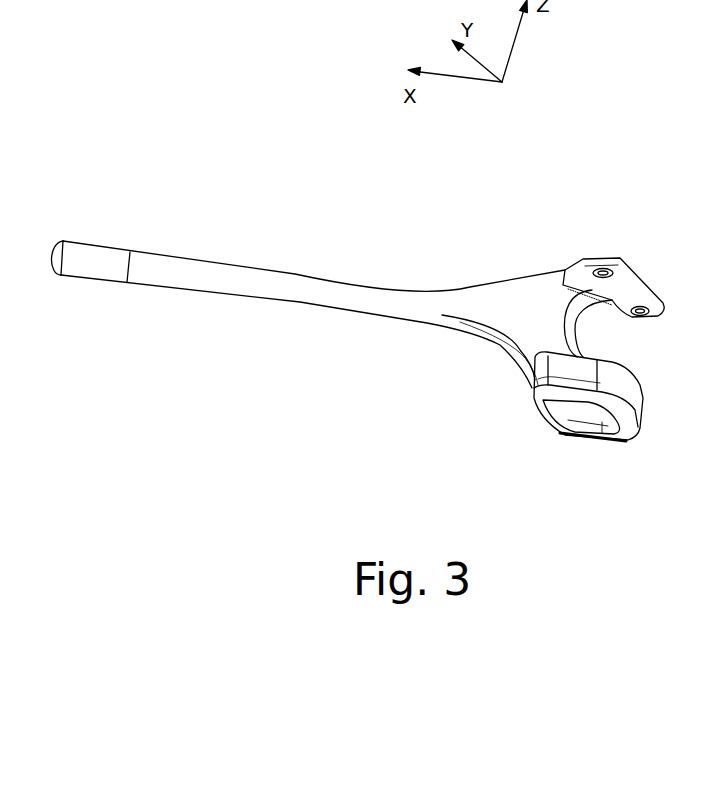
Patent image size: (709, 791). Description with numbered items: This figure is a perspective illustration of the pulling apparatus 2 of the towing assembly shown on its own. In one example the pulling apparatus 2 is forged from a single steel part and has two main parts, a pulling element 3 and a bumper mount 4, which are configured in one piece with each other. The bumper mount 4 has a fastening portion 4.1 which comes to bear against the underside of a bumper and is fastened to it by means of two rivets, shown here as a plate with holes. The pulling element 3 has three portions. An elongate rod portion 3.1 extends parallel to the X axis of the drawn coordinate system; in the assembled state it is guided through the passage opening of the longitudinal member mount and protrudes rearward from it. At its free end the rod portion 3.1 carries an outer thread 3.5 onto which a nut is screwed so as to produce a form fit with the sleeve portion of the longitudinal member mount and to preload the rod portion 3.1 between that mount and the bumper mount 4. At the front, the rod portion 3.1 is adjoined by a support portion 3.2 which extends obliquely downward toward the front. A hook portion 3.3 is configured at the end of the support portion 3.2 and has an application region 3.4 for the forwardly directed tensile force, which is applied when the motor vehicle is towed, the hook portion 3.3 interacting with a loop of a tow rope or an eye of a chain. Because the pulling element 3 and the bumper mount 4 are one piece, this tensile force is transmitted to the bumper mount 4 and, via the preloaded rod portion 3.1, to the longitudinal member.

The pulling apparatus 2 is at (300, 300).
The pulling element 3 is at (362, 352).
The rod portion 3.1 is at (275, 255).
The support portion 3.2 is at (500, 376).
The hook portion 3.3 is at (655, 437).
The application region 3.4 is at (582, 416).
The outer thread 3.5 is at (102, 228).
The bumper mount 4 is at (522, 251).
The fastening portion 4.1 is at (635, 255).